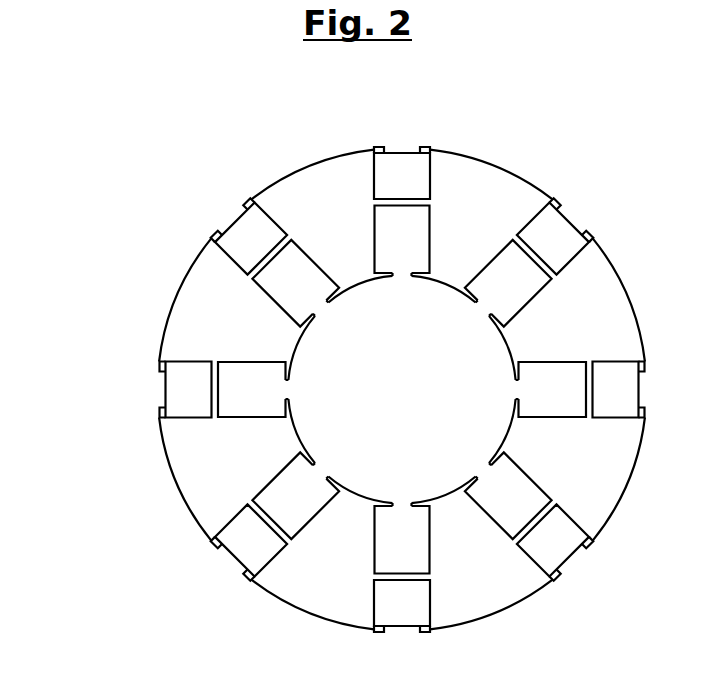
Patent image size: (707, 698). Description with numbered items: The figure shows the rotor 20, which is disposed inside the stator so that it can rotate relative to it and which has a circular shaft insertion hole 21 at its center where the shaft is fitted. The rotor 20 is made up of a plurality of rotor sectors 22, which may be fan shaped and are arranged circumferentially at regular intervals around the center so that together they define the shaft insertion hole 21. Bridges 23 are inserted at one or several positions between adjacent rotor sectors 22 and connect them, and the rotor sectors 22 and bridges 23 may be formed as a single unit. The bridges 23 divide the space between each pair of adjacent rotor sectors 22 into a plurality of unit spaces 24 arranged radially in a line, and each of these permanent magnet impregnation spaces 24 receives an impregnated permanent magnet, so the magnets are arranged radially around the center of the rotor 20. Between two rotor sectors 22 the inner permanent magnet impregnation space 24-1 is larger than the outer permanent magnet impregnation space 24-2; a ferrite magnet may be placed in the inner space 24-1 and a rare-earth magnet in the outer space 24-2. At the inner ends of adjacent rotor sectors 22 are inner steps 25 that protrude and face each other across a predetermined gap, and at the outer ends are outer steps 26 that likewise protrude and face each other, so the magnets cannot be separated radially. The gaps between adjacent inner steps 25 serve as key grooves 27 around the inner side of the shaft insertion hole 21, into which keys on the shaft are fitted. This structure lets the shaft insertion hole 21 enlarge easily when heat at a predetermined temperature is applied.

The rotor 20 is at (358, 380).
The shaft insertion hole 21 is at (358, 417).
The rotor sector 22 is at (612, 468).
The bridge 23 is at (554, 503).
The permanent magnet impregnation space 24 is at (328, 389).
The inner permanent magnet impregnation space 24-1 is at (258, 386).
The outer permanent magnet impregnation space 24-2 is at (190, 391).
The inner step 25 is at (290, 401).
The outer step 26 is at (425, 147).
The key groove 27 is at (484, 312).